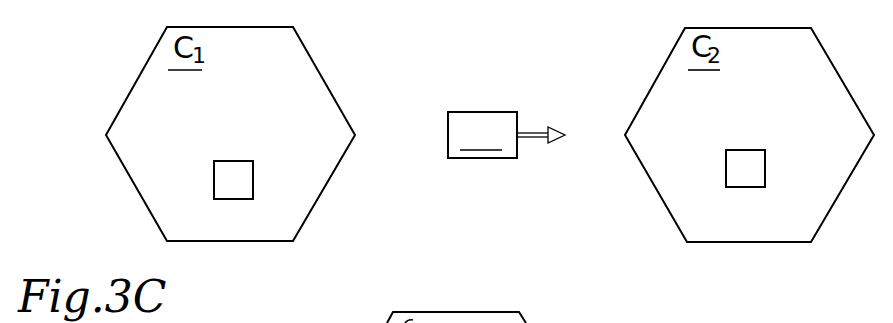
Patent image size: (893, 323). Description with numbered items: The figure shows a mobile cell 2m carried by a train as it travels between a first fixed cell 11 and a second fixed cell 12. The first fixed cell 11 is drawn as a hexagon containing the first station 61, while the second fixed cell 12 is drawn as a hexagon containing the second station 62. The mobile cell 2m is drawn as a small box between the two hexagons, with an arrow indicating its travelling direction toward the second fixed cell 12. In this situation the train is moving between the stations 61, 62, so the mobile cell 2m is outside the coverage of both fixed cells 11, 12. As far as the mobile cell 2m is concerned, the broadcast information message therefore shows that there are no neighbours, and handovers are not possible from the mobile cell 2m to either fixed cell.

The first fixed cell 11 is at (147, 65).
The second fixed cell 12 is at (665, 65).
The mobile cell 2m is at (472, 111).
The first station 61 is at (229, 159).
The second station 62 is at (741, 149).